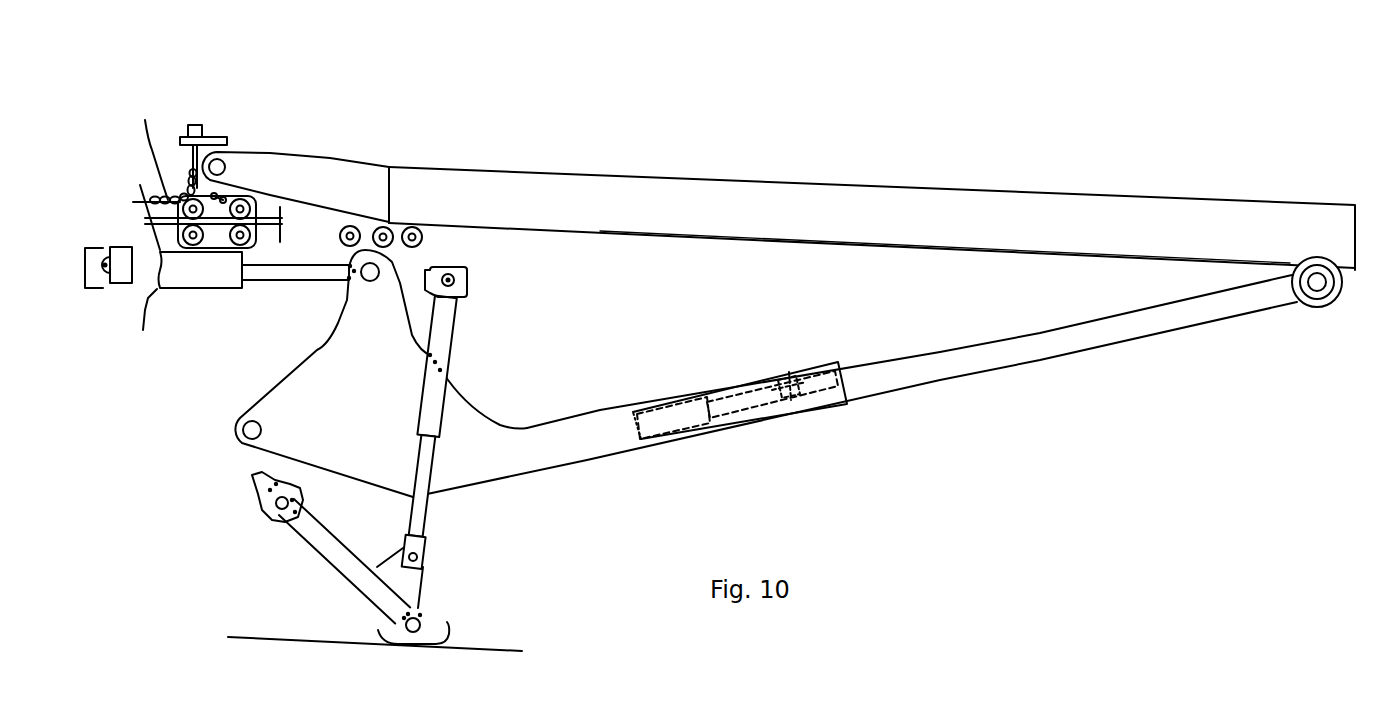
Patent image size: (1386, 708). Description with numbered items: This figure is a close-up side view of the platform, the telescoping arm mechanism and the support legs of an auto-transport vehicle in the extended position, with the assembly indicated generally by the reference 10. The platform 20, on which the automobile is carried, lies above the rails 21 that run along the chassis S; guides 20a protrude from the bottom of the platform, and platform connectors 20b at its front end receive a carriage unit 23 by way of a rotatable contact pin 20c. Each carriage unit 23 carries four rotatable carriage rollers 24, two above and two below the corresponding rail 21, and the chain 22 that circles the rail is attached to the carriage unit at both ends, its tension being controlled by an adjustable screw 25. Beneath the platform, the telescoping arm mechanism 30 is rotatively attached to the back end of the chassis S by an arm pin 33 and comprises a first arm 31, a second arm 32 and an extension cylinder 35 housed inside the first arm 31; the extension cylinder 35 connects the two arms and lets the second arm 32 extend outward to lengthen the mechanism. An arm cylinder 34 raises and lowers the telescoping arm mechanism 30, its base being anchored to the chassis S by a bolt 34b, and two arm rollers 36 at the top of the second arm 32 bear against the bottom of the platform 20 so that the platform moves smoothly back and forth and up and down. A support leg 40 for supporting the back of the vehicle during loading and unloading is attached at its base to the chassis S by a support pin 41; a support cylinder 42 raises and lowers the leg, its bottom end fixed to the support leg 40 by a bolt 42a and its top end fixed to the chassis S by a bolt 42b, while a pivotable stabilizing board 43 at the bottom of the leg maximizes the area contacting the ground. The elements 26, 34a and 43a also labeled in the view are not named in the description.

The conveying apparatus 10 is at (268, 137).
The platform 20 is at (680, 180).
The guides 20a is at (948, 250).
The platform connectors 20b is at (365, 163).
The rotatable contact pin 20c is at (219, 162).
The rails 21 is at (262, 200).
The chain 22 is at (167, 195).
The carriage unit 23 is at (218, 137).
The carriage rollers 24 is at (242, 209).
The adjustable screw 25 is at (196, 125).
The support rollers 26 is at (420, 228).
The telescoping arm mechanism 30 is at (818, 412).
The first arm 31 is at (667, 440).
The second arm 32 is at (1067, 342).
The arm pin 33 is at (250, 432).
The arm cylinder 34 is at (172, 282).
The bracket pivot 34a is at (362, 280).
The bolt 34b is at (103, 247).
The extension cylinder 35 is at (688, 405).
The arm rollers 36 is at (1313, 296).
The support leg 40 is at (312, 562).
The support pin 41 is at (268, 510).
The support cylinder 42 is at (443, 335).
The bolt 42a is at (420, 552).
The bolt 42b is at (465, 277).
The pivotable stabilizing board 43 is at (447, 632).
The shoe pivot pin 43a is at (417, 612).
The chassis S is at (93, 290).